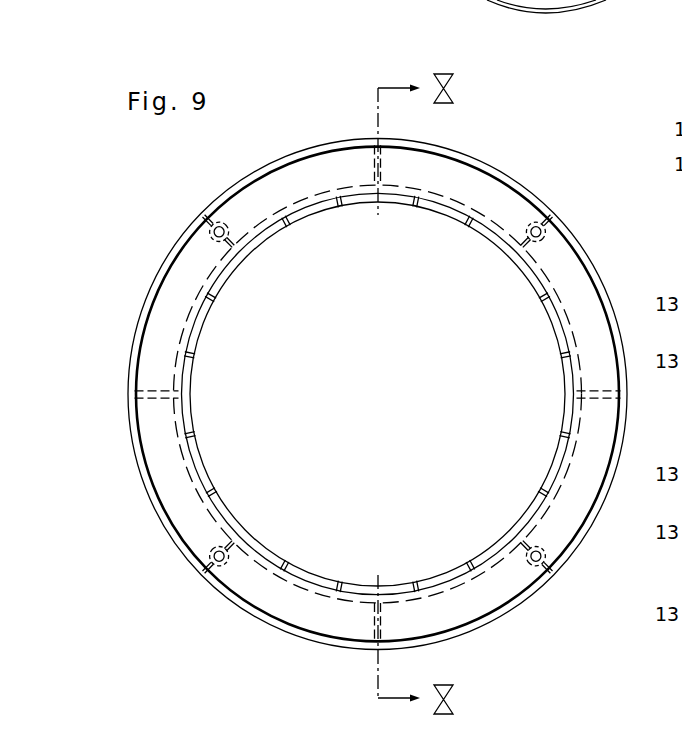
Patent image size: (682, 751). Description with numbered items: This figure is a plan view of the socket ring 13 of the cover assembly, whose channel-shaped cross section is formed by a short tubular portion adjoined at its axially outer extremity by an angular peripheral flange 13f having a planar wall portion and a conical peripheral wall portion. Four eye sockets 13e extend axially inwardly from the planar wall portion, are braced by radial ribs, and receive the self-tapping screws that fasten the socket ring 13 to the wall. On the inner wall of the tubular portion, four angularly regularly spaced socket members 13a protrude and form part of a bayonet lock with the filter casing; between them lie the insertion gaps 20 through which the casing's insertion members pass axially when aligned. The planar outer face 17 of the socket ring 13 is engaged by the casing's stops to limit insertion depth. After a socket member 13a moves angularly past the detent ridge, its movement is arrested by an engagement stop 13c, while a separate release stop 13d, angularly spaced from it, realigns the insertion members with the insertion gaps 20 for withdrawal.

The socket ring 13 is at (533, 182).
The socket member 13a is at (568, 395).
The engagement stop 13c is at (563, 436).
The release stop 13d is at (541, 491).
The eye socket 13e is at (204, 221).
The angular peripheral flange 13f is at (421, 143).
The planar outer face 17 is at (220, 514).
The insertion gap 20 is at (270, 229).